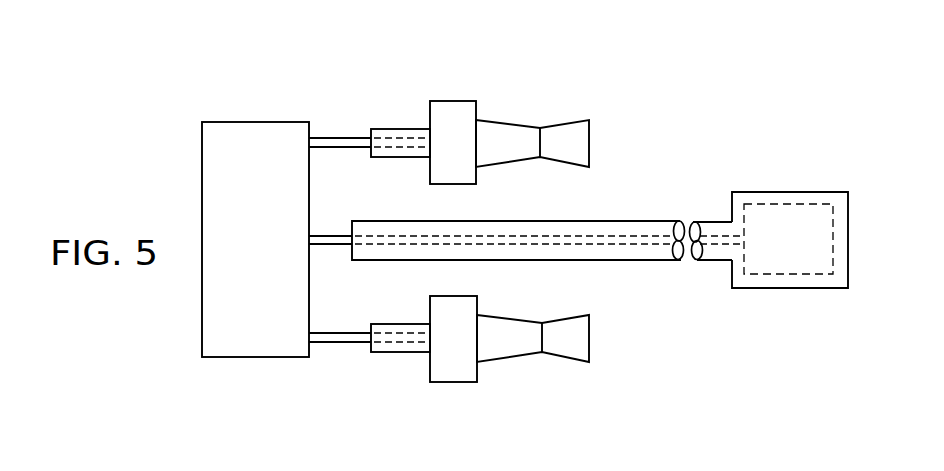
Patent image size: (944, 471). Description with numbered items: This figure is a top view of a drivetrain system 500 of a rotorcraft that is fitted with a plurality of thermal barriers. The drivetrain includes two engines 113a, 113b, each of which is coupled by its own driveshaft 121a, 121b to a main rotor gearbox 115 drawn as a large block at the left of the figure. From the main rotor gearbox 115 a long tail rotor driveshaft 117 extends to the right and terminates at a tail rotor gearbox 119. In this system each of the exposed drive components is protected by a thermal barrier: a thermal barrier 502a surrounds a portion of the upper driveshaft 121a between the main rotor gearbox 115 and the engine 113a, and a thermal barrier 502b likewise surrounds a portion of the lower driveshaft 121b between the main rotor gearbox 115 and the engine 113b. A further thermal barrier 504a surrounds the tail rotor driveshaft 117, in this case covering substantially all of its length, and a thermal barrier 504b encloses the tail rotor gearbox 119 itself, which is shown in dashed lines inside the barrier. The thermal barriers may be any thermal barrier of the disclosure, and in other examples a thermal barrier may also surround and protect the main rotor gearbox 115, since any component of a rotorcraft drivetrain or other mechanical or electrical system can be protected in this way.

The drivetrain system 500 is at (292, 64).
The main rotor gearbox 115 is at (257, 121).
The driveshaft 121a is at (349, 137).
The driveshaft 121b is at (348, 347).
The thermal barrier 502a is at (412, 128).
The thermal barrier 502b is at (412, 357).
The engine 113a is at (563, 121).
The engine 113b is at (563, 355).
The thermal barrier 504a is at (625, 221).
The thermal barrier 504b is at (815, 288).
The tail rotor driveshaft 117 is at (638, 245).
The tail rotor gearbox 119 is at (787, 203).